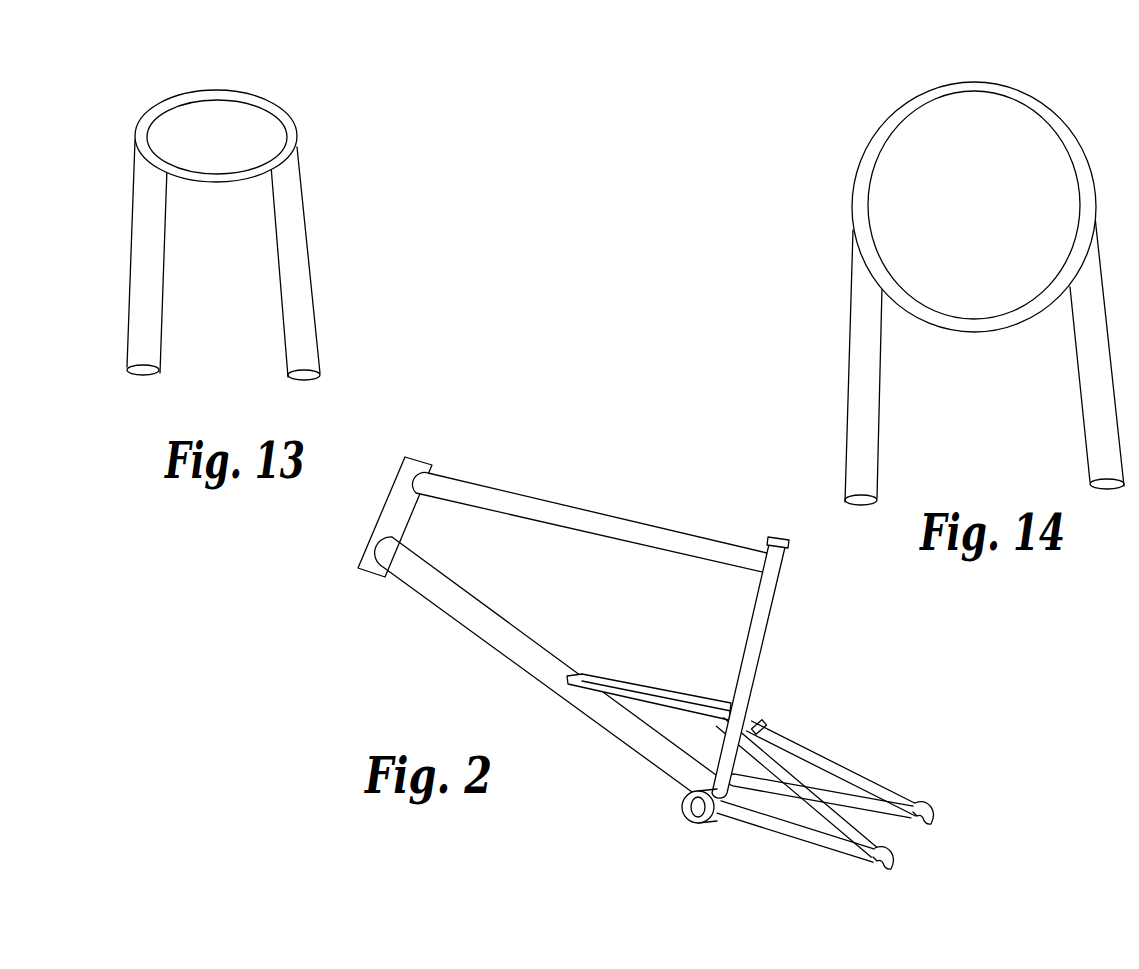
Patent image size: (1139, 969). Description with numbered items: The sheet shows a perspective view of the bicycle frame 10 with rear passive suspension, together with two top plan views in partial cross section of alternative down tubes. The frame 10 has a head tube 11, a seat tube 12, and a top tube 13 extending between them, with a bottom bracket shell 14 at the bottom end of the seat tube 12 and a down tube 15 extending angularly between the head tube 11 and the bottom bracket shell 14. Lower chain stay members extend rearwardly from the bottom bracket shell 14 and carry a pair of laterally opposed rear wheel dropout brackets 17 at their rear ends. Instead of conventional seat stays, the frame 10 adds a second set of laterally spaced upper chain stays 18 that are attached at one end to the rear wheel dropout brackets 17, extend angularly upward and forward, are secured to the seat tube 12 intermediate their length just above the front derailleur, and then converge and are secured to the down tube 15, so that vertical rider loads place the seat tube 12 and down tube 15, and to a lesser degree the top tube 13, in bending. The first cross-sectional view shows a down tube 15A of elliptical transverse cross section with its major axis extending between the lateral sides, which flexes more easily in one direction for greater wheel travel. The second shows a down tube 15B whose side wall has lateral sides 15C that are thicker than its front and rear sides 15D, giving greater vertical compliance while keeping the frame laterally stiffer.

In FIG. 2, the bicycle frame 10 is at (850, 656).
In FIG. 2, the head tube 11 is at (392, 500).
In FIG. 2, the seat tube 12 is at (753, 623).
In FIG. 2, the top tube 13 is at (525, 498).
In FIG. 2, the bottom bracket shell 14 is at (686, 806).
In FIG. 2, the down tube 15 is at (500, 618).
In FIG. 13, the down tube 15A is at (272, 103).
In FIG. 14, the down tube 15B is at (978, 83).
In FIG. 14, the lateral sides 15C is at (870, 194).
In FIG. 14, the front and rear sides 15D is at (967, 92).
In FIG. 2, the rear wheel dropout brackets 17 is at (888, 858).
In FIG. 13, the upper chain stays 18 is at (128, 292).
In FIG. 2, the upper chain stays 18 is at (812, 777).